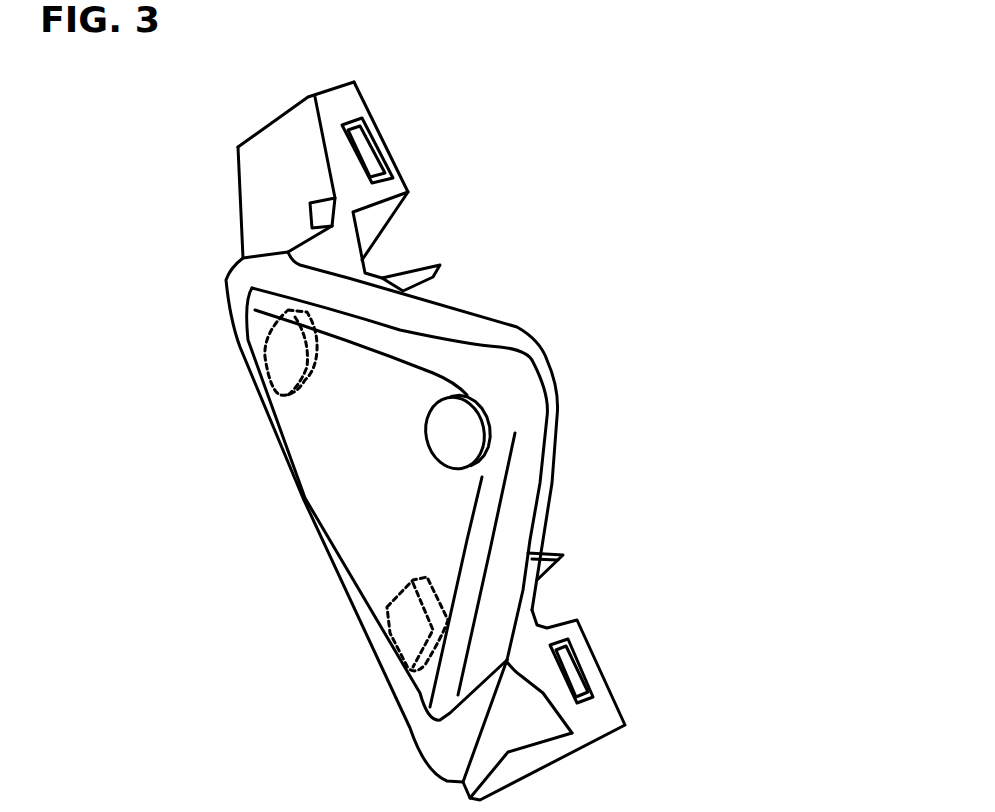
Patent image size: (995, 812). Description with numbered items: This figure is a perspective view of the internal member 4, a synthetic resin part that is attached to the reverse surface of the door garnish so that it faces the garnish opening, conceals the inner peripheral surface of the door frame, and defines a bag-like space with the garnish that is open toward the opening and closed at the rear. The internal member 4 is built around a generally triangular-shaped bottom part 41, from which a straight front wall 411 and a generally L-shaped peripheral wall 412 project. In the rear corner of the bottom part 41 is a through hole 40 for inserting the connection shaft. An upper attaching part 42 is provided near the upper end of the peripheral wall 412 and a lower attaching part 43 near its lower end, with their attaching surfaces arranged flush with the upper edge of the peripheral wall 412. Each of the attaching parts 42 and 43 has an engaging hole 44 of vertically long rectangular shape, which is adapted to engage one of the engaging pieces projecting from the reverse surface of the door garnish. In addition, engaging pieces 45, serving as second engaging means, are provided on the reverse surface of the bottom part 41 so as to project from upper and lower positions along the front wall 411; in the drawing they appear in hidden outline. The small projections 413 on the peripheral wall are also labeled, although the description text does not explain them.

The internal member 4 is at (551, 320).
The through hole 40 is at (467, 433).
The bottom part 41 is at (372, 525).
The front wall 411 is at (290, 455).
The peripheral wall 412 is at (552, 365).
The projection 413 is at (417, 267).
The upper attaching part 42 is at (335, 142).
The lower attaching part 43 is at (598, 712).
The engaging hole 44 is at (380, 148).
The engaging pieces 45 is at (290, 360).